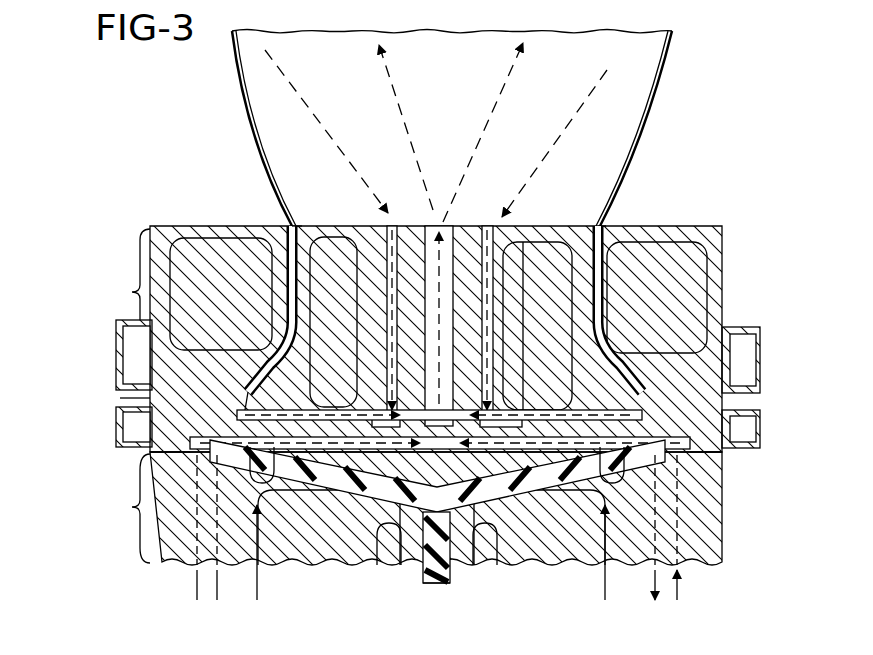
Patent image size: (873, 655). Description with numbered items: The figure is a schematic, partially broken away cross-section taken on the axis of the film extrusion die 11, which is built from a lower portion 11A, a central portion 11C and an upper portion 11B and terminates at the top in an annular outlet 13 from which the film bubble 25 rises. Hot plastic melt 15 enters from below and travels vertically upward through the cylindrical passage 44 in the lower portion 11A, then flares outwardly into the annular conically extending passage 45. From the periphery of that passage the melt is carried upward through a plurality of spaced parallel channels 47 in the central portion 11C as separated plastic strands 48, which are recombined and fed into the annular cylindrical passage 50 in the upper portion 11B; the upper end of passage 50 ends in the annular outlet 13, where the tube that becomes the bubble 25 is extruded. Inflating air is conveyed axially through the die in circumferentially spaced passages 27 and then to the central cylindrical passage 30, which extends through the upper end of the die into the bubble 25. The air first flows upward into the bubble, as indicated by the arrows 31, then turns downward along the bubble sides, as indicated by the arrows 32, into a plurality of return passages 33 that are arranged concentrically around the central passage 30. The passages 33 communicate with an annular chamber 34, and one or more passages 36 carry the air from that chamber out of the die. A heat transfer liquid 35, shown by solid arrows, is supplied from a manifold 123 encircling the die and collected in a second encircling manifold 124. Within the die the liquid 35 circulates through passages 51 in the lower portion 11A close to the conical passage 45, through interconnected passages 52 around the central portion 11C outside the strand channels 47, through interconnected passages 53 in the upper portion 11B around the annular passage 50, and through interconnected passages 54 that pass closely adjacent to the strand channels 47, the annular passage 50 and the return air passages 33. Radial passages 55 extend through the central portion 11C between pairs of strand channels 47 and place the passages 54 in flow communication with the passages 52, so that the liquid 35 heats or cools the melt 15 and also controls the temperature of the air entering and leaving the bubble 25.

The extrusion die 11 is at (236, 180).
The lower portion of die 11A is at (130, 507).
The upper portion of die 11B is at (130, 290).
The central portion of die 11C is at (128, 398).
The annular outlet 13 is at (600, 226).
The plastic melt 15 is at (452, 583).
The film bubble 25 is at (652, 110).
The circumferentially spaced passages 27 is at (190, 580).
The central cylindrical passage 30 is at (432, 230).
The arrows indicating upward air flow 31 is at (503, 90).
The arrows indicating downward air flow 32 is at (300, 112).
The return air passages 33 is at (388, 234).
The annular chamber 34 is at (340, 418).
The heat transfer liquid 35 is at (150, 332).
The air outlet passages 36 is at (222, 580).
The cylindrical passage 44 is at (423, 580).
The annular conically extending passage 45 is at (540, 505).
The strand channels 47 is at (224, 437).
The plastic strands 48 is at (250, 410).
The annular cylindrical passage 50 is at (288, 228).
The liquid passages in lower die portion 51 is at (380, 560).
The interconnected passages in central portion 52 is at (188, 437).
The interconnected passages in upper portion 53 is at (212, 237).
The interconnected passages through central and upper portions 54 is at (322, 232).
The radial passages 55 is at (260, 474).
The supply manifold 123 is at (118, 345).
The collection manifold 124 is at (118, 426).